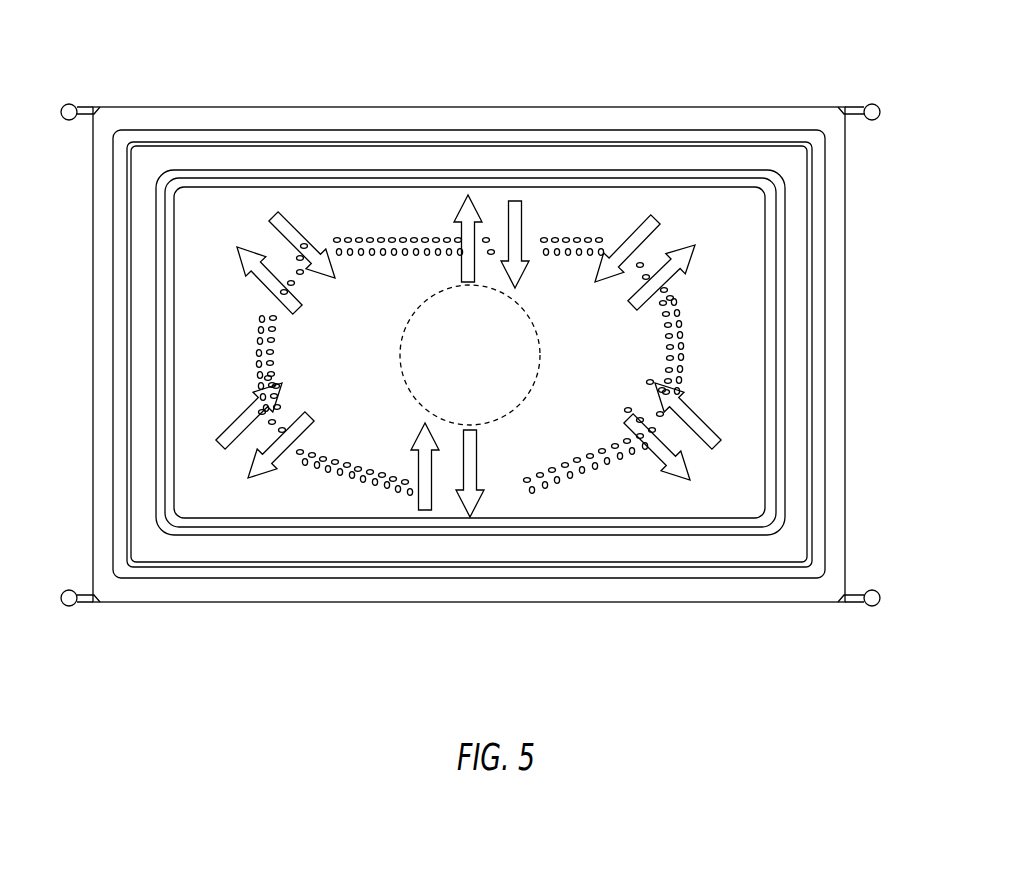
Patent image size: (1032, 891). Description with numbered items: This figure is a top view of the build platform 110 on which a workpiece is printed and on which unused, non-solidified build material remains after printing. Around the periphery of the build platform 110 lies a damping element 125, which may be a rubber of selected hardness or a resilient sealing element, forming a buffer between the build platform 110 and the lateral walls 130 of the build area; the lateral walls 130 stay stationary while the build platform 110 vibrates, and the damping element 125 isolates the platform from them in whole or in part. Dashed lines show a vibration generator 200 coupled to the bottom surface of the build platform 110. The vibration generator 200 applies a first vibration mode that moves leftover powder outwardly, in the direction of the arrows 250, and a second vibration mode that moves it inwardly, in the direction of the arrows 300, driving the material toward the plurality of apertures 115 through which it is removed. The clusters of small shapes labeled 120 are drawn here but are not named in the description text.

The build platform 110 is at (189, 203).
The plurality of apertures 115 is at (590, 238).
The second cell population 120 is at (665, 318).
The damping element 125 is at (330, 178).
The lateral walls 130 is at (528, 131).
The vibration generator 200 is at (412, 397).
The arrows 250 is at (252, 474).
The arrows 300 is at (421, 506).